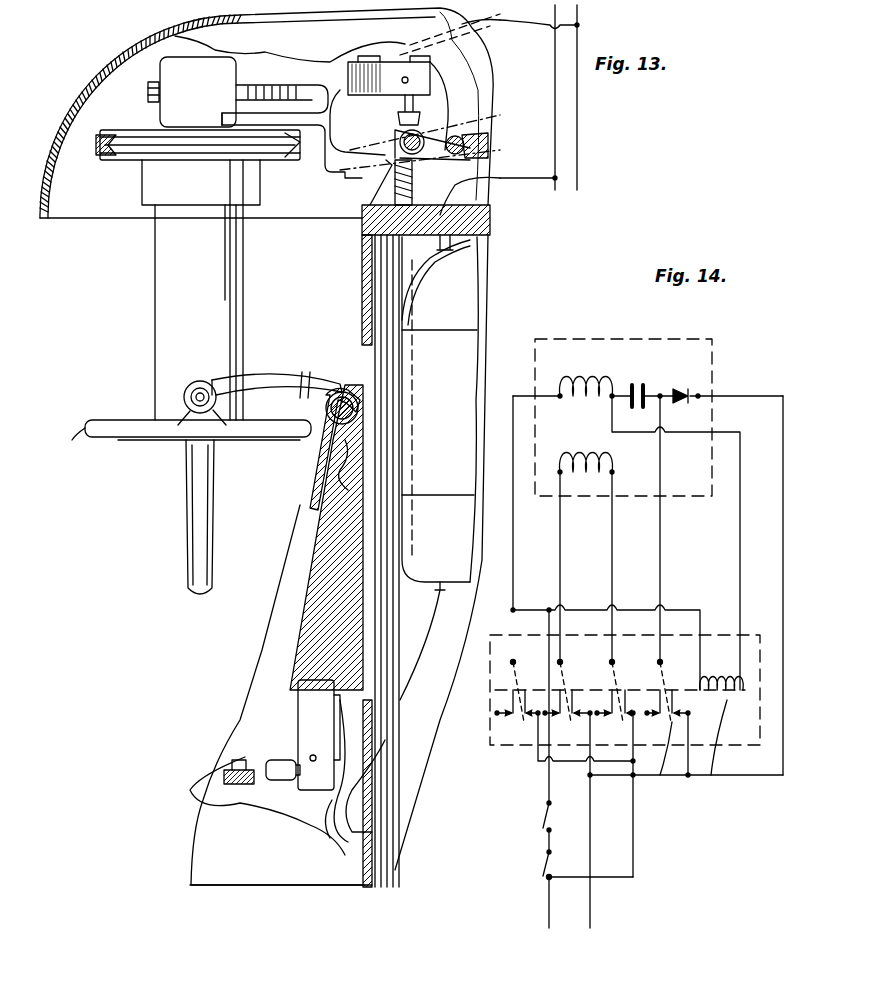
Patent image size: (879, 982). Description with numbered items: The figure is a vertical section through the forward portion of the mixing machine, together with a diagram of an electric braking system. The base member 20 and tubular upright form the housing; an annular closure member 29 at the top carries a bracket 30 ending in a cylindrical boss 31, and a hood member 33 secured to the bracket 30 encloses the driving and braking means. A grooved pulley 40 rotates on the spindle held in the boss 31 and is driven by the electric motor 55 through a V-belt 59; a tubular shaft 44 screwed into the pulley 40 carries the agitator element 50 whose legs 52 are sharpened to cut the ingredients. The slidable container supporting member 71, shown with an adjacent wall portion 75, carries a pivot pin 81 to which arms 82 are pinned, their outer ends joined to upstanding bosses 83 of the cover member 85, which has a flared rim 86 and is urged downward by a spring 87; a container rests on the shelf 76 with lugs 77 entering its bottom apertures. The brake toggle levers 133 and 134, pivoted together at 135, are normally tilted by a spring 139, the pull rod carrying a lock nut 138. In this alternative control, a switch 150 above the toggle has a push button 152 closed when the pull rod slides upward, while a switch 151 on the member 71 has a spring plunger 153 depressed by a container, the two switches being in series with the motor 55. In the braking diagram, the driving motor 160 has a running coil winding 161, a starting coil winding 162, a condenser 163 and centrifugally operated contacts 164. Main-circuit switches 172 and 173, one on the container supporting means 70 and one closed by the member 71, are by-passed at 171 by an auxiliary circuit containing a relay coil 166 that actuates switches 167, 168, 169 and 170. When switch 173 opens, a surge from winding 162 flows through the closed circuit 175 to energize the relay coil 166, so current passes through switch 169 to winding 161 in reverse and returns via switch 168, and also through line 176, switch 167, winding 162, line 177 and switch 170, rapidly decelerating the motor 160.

In FIG. 13, the base member 20 is at (192, 862).
In FIG. 13, the annular closure member 29 is at (490, 225).
In FIG. 13, the bracket 30 is at (330, 176).
In FIG. 13, the cylindrical boss 31 is at (166, 70).
In FIG. 13, the hood member 33 is at (252, 28).
In FIG. 13, the grooved pulley 40 is at (130, 160).
In FIG. 13, the tubular shaft 44 is at (162, 312).
In FIG. 13, the agitator element 50 is at (230, 522).
In FIG. 13, the legs 52 is at (190, 552).
In FIG. 13, the electric motor 55 is at (478, 298).
In FIG. 13, the V-belt 59 is at (98, 150).
In FIG. 13, the container supporting means 70 is at (211, 722).
In FIG. 13, the slidable container supporting member 71 is at (272, 642).
In FIG. 13, the wall 75 is at (295, 606).
In FIG. 13, the shelf 76 is at (230, 795).
In FIG. 13, the lugs 77 is at (226, 764).
In FIG. 13, the pivot pin 81 is at (328, 420).
In FIG. 13, the arms 82 is at (330, 348).
In FIG. 13, the upstanding bosses 83 is at (187, 425).
In FIG. 13, the cover member 85 is at (112, 430).
In FIG. 13, the flared rim 86 is at (92, 438).
In FIG. 13, the spring 87 is at (322, 458).
In FIG. 13, the toggle lever 133 is at (362, 185).
In FIG. 13, the toggle lever 134 is at (425, 135).
In FIG. 13, the pivot 135 is at (366, 210).
In FIG. 13, the lock nut 138 is at (470, 150).
In FIG. 13, the spring 139 is at (470, 165).
In FIG. 13, the electric switch 150 is at (358, 62).
In FIG. 13, the electric switch 151 is at (300, 690).
In FIG. 13, the push button 152 is at (430, 95).
In FIG. 13, the spring plunger 153 is at (270, 760).
In FIG. 14, the driving motor 160 is at (585, 340).
In FIG. 14, the running coil winding 161 is at (584, 450).
In FIG. 14, the starting coil winding 162 is at (592, 372).
In FIG. 14, the condenser 163 is at (642, 375).
In FIG. 14, the centrifugally operated contacts 164 is at (688, 380).
In FIG. 14, the relay coil 166 is at (710, 780).
In FIG. 14, the switch 167 is at (516, 702).
In FIG. 14, the switch 168 is at (567, 702).
In FIG. 14, the switch 169 is at (615, 702).
In FIG. 14, the switch 170 is at (665, 783).
In FIG. 14, the by-pass 171 is at (636, 848).
In FIG. 14, the switch 172 is at (543, 870).
In FIG. 14, the switch 173 is at (543, 822).
In FIG. 14, the closed circuit 175 is at (514, 578).
In FIG. 14, the line 176 is at (568, 768).
In FIG. 14, the line 177 is at (662, 548).